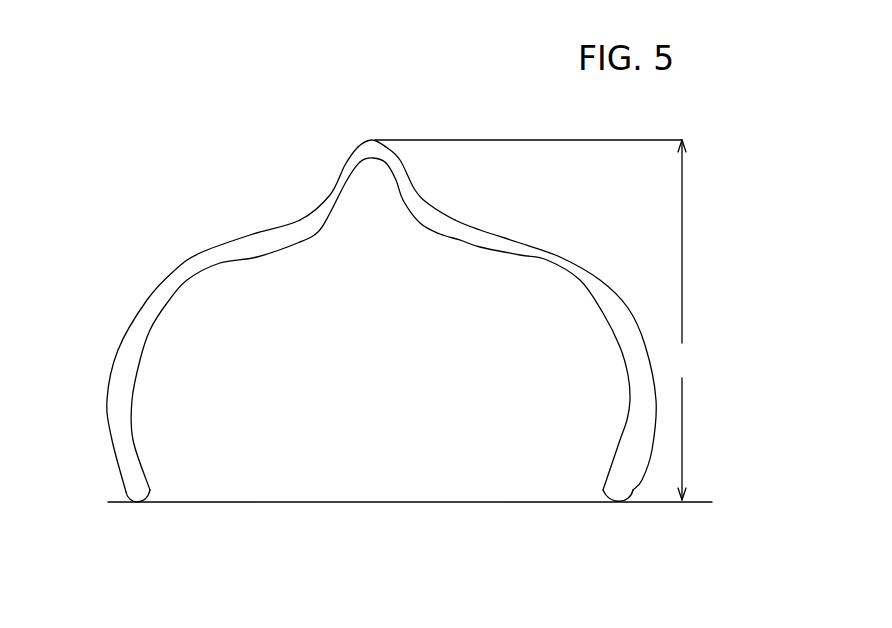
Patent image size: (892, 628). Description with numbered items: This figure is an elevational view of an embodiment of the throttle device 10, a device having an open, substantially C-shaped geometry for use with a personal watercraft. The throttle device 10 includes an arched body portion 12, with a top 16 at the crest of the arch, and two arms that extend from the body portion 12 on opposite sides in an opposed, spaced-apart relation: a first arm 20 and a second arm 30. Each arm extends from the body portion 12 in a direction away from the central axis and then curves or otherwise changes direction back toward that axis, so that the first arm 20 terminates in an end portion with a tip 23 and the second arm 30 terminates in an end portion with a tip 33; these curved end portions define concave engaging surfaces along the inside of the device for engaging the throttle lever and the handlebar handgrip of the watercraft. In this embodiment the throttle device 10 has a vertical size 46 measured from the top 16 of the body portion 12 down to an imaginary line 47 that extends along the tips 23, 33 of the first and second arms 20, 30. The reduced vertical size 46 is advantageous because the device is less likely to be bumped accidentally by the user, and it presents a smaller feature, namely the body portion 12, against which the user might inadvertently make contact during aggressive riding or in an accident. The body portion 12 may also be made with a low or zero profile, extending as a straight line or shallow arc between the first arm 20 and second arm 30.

The throttle device 10 is at (125, 237).
The body portion 12 is at (345, 185).
The top 16 is at (375, 140).
The first arm 20 is at (618, 317).
The tip 23 is at (613, 498).
The second arm 30 is at (150, 313).
The tip 33 is at (148, 496).
The vertical size 46 is at (534, 320).
The imaginary line 47 is at (438, 502).